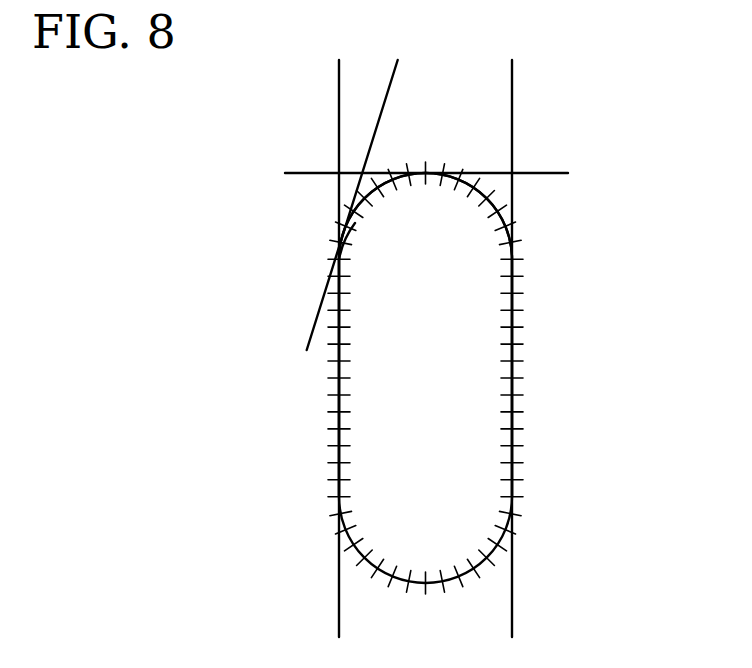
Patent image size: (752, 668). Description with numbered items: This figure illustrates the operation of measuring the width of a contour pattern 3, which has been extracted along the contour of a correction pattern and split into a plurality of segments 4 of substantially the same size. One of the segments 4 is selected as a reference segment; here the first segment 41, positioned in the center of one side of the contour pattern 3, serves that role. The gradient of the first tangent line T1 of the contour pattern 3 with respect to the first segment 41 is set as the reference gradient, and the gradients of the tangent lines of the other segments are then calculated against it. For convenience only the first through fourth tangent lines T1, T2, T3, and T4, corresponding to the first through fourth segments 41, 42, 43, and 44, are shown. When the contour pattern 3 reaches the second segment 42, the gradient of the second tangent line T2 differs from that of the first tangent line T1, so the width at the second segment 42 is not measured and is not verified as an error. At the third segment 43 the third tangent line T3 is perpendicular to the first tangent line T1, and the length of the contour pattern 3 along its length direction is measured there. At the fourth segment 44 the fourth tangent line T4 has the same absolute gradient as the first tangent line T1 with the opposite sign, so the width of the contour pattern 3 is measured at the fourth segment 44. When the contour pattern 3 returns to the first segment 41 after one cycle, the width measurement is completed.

The first tangent line T1 is at (338, 86).
The second tangent line T2 is at (310, 331).
The third tangent line T3 is at (310, 172).
The fourth tangent line T4 is at (514, 88).
The contour pattern 3 is at (513, 368).
The segments 4 is at (513, 471).
The first segment 41 is at (338, 373).
The second segment 42 is at (344, 242).
The third segment 43 is at (437, 172).
The fourth segment 44 is at (513, 288).